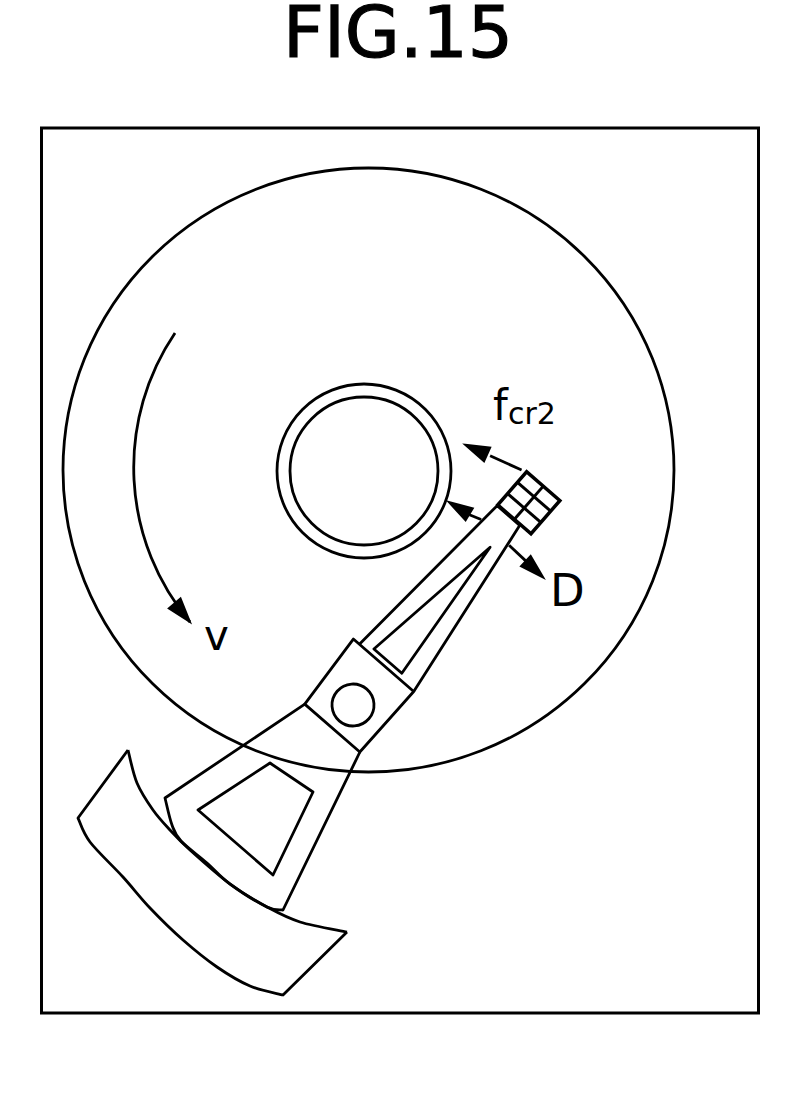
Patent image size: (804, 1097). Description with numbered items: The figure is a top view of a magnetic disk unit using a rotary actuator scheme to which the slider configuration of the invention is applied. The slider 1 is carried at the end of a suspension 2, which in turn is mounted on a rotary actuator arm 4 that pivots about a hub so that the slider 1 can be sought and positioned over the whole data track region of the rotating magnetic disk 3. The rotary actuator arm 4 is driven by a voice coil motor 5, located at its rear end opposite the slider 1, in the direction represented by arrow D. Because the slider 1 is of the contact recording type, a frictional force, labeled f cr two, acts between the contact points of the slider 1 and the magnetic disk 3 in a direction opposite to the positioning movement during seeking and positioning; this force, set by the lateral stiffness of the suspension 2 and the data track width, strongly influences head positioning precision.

The slider 1 is at (551, 512).
The suspension 2 is at (395, 727).
The magnetic disk 3 is at (368, 470).
The rotary actuator arm 4 is at (317, 810).
The voice coil motor 5 is at (168, 877).